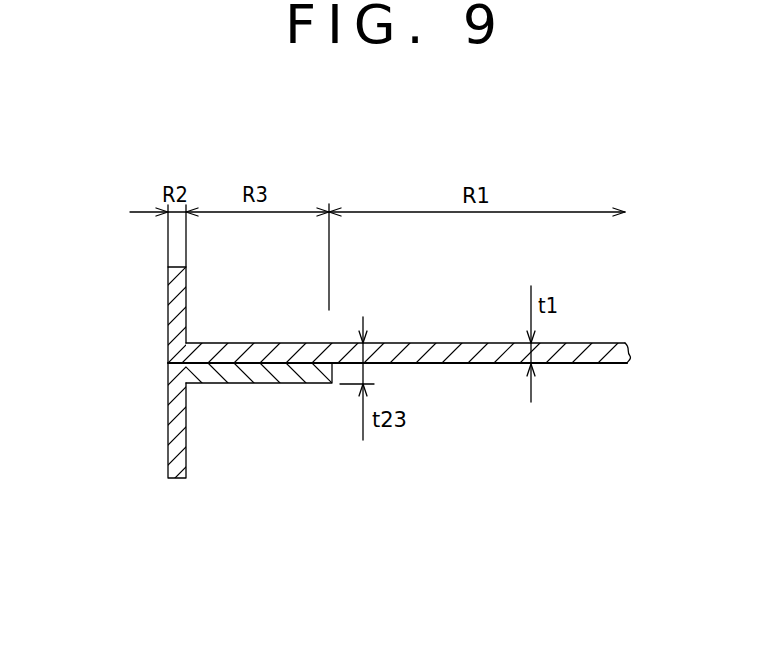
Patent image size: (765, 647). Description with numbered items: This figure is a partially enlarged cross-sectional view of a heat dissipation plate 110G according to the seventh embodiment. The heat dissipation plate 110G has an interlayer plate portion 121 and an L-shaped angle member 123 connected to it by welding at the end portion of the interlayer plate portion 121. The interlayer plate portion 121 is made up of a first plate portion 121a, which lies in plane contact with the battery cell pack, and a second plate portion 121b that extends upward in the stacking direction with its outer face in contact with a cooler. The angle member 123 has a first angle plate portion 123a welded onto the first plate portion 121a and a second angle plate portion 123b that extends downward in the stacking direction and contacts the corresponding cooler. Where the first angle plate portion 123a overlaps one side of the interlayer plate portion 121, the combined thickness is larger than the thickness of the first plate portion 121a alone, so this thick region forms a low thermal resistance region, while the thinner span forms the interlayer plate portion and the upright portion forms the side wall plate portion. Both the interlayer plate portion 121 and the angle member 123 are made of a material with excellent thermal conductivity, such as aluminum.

The heat dissipation plate 110G is at (152, 443).
The interlayer plate portion 121 is at (325, 268).
The first plate portion 121a is at (343, 353).
The second plate portion 121b is at (180, 332).
The L-shaped angle member 123 is at (332, 540).
The first angle plate portion 123a is at (264, 380).
The second angle plate portion 123b is at (184, 470).